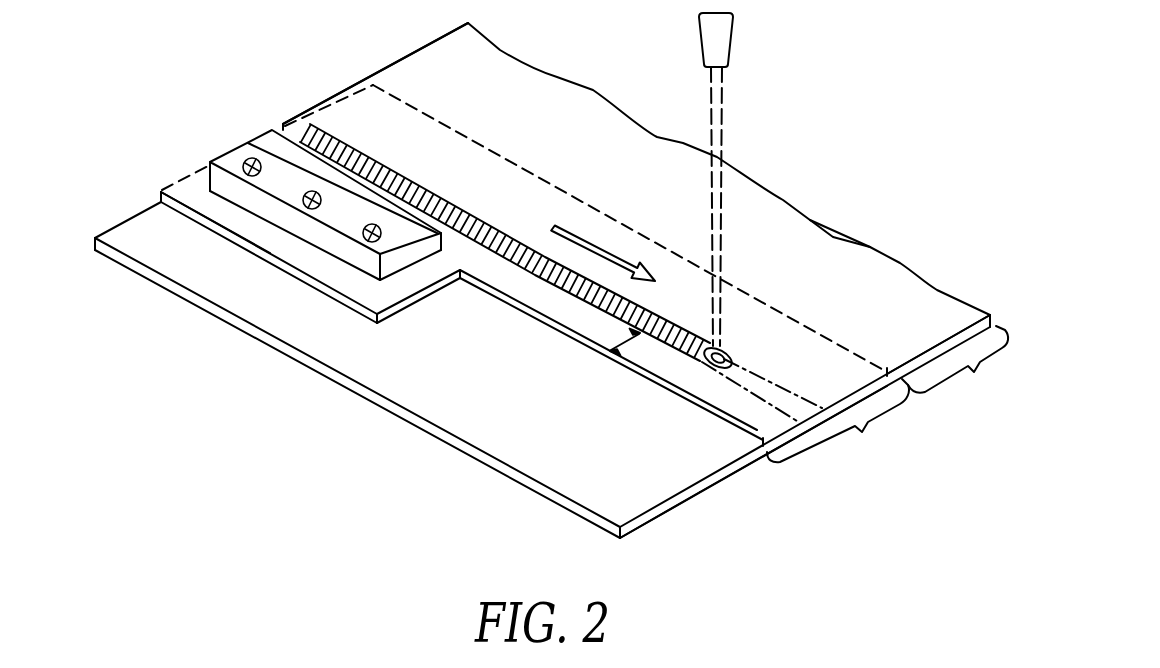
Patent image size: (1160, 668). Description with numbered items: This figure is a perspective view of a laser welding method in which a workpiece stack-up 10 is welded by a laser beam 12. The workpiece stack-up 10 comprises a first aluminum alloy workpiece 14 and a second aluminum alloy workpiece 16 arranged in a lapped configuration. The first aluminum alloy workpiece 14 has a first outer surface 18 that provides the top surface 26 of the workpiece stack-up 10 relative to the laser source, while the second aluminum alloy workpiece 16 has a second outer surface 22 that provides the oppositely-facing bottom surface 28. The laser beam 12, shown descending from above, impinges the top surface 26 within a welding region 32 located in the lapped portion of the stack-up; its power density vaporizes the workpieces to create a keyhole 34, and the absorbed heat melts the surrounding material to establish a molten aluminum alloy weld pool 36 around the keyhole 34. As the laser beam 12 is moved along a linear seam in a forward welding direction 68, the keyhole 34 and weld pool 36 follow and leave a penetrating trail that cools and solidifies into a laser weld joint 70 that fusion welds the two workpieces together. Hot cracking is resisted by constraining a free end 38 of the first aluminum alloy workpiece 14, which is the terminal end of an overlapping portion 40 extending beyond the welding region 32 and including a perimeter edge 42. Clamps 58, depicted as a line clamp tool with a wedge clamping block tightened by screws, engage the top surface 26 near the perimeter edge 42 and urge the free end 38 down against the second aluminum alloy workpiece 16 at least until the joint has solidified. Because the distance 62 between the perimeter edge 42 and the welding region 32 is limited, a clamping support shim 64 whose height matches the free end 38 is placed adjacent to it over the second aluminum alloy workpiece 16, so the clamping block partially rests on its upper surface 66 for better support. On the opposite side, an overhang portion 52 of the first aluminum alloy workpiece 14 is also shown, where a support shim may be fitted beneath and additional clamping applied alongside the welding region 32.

The workpiece stack-up 10 is at (367, 112).
The laser beam 12 is at (722, 188).
The first aluminum alloy workpiece 14 is at (848, 303).
The second aluminum alloy workpiece 16 is at (615, 472).
The first outer surface 18 is at (860, 268).
The second outer surface 22 is at (760, 460).
The top surface 26 is at (928, 310).
The bottom surface 28 is at (690, 500).
The welding region 32 is at (755, 371).
The keyhole 34 is at (724, 348).
The molten aluminum alloy weld pool 36 is at (705, 346).
The free end 38 is at (497, 289).
The overlapping portion 40 is at (895, 456).
The perimeter edge 42 is at (528, 316).
The overhang portion 52 is at (1005, 396).
The clamps 58 is at (333, 243).
The distance 62 is at (628, 346).
The clamping support shim 64 is at (396, 294).
The upper surface 66 is at (268, 240).
The forward welding direction 68 is at (600, 253).
The laser weld joint 70 is at (478, 214).